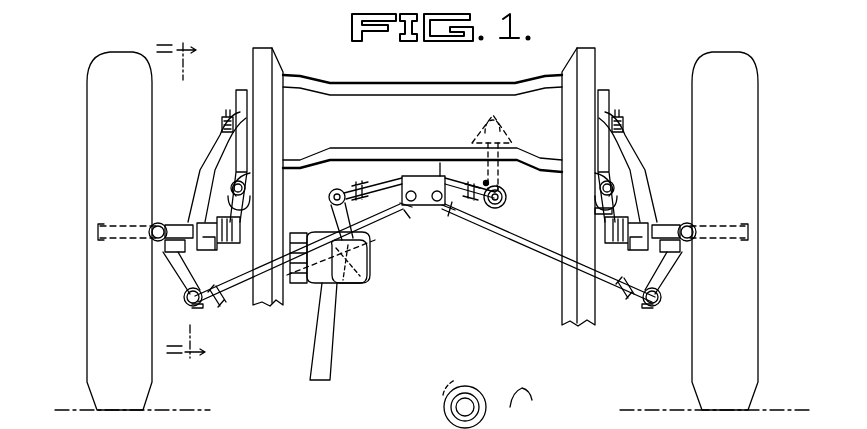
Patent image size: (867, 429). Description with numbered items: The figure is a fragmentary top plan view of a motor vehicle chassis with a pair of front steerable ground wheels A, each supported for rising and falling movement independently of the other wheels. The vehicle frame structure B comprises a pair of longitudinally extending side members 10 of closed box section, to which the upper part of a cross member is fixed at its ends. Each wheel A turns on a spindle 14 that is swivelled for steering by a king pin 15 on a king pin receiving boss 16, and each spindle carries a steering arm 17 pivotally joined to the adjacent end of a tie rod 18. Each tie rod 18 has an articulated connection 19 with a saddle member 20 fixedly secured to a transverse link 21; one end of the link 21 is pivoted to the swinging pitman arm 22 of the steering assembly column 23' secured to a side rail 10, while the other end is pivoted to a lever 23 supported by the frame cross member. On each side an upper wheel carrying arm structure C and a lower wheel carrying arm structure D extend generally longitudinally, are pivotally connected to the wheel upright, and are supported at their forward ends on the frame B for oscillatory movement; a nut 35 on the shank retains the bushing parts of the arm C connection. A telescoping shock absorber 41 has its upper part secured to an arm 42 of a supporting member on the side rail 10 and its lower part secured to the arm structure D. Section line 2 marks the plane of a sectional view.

The front steerable ground wheel A is at (93, 65).
The vehicle frame structure B is at (292, 68).
The upper wheel carrying arm structure C is at (203, 164).
The lower wheel carrying arm structure D is at (219, 142).
The section line 2- 2 is at (187, 203).
The side member 10 is at (268, 308).
The spindle 14 is at (97, 231).
The king pin 15 is at (168, 212).
The king pin receiving boss 16 is at (160, 244).
The steering arm 17 is at (180, 300).
The tie rod 18 is at (228, 300).
The articulated connection 19 is at (405, 208).
The saddle member 20 is at (432, 207).
The transverse link 21 is at (444, 177).
The pitman arm 22 is at (333, 206).
The lever 23 is at (504, 154).
The steering assembly column 23' is at (331, 306).
The nut 35 is at (224, 112).
The shock absorber 41 is at (590, 211).
The arm of supporting member 42 is at (245, 190).